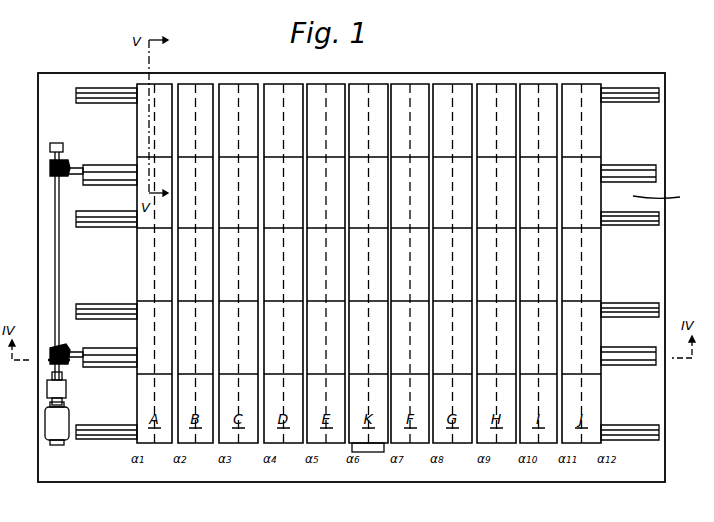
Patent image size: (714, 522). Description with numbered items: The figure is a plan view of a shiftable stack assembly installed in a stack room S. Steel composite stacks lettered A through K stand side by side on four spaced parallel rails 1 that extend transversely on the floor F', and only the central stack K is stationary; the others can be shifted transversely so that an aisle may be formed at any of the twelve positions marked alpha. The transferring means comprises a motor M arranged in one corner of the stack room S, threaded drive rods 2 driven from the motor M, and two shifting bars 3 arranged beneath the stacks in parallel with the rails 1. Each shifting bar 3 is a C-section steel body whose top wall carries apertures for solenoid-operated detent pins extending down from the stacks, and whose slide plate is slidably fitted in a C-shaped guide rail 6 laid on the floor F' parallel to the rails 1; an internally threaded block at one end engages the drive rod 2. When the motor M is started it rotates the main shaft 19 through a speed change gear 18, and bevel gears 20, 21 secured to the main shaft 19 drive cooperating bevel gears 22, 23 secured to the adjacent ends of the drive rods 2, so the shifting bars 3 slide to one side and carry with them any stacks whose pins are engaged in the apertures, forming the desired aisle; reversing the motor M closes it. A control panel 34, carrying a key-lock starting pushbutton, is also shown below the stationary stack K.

The rails 1 is at (88, 103).
The threaded drive rods 2 is at (116, 170).
The shifting bars 3 is at (617, 175).
The guide rail 6 is at (96, 185).
The speed change gear 18 is at (66, 390).
The main shaft 19 is at (54, 247).
The bevel gear 20 is at (50, 362).
The bevel gear 21 is at (52, 162).
The bevel gear 22 is at (66, 350).
The bevel gear 23 is at (56, 180).
The control panel 34 is at (372, 452).
The motor M is at (46, 428).
The stack room S is at (664, 118).
The floor F' is at (664, 200).